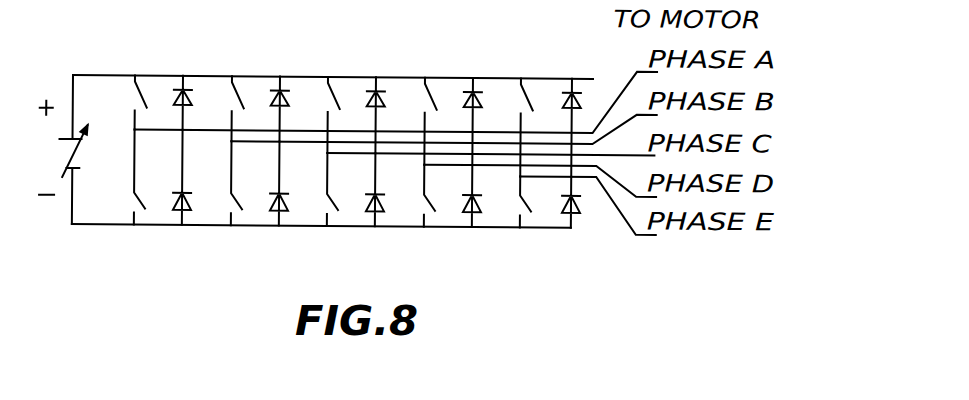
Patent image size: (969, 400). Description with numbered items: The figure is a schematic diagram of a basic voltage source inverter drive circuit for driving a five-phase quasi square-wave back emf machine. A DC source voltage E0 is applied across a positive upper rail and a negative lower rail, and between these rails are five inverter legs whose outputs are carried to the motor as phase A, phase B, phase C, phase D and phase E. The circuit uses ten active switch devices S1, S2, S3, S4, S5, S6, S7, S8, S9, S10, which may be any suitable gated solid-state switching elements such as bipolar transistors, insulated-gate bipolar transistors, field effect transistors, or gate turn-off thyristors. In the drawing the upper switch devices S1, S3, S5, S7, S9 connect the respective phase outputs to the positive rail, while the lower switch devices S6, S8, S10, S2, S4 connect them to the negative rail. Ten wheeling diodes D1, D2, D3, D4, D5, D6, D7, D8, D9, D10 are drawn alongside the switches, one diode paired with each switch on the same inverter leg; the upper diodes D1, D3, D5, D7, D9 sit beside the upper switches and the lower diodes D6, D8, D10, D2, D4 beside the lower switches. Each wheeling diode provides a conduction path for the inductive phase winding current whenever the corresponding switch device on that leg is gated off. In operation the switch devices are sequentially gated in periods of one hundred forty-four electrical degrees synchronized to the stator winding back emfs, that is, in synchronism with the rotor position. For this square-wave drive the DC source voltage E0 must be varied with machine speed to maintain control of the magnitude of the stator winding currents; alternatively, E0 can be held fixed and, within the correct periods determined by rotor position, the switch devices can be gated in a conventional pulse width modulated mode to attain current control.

The DC source voltage E0 is at (54, 150).
The switch device S1 is at (130, 102).
The switch device S2 is at (417, 196).
The switch device S3 is at (224, 108).
The switch device S4 is at (511, 201).
The switch device S5 is at (320, 115).
The switch device S6 is at (126, 176).
The switch device S7 is at (418, 121).
The switch device S8 is at (224, 183).
The switch device S9 is at (512, 127).
The switch device S10 is at (315, 189).
The wheeling diode D1 is at (172, 103).
The wheeling diode D2 is at (458, 196).
The wheeling diode D3 is at (265, 108).
The wheeling diode D4 is at (557, 202).
The wheeling diode D5 is at (361, 115).
The wheeling diode D6 is at (168, 177).
The wheeling diode D7 is at (459, 121).
The wheeling diode D8 is at (265, 183).
The wheeling diode D9 is at (557, 128).
The wheeling diode D10 is at (360, 189).